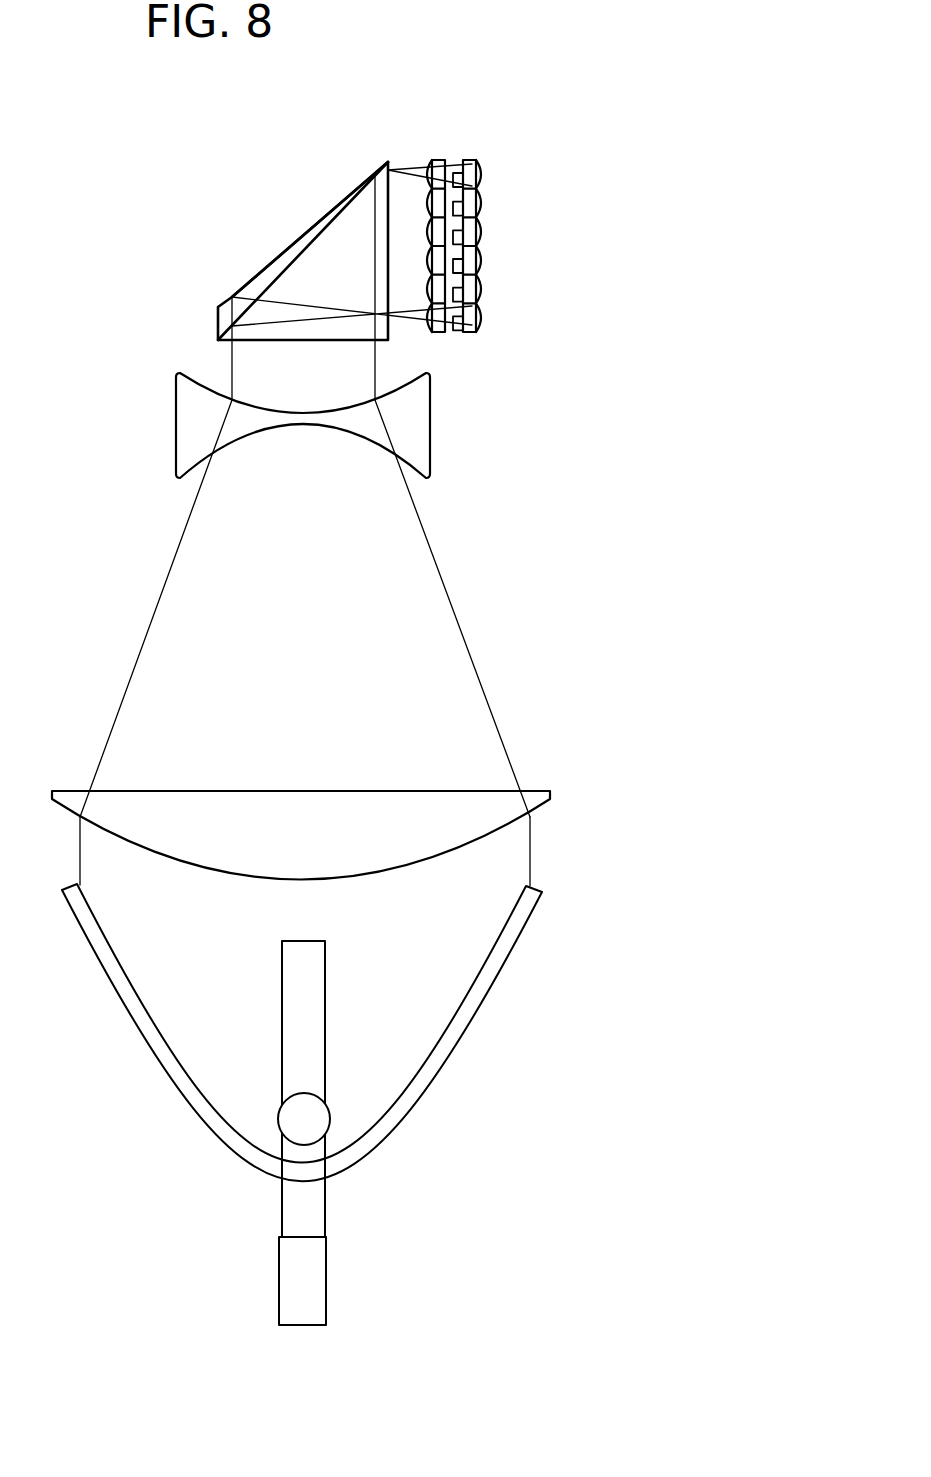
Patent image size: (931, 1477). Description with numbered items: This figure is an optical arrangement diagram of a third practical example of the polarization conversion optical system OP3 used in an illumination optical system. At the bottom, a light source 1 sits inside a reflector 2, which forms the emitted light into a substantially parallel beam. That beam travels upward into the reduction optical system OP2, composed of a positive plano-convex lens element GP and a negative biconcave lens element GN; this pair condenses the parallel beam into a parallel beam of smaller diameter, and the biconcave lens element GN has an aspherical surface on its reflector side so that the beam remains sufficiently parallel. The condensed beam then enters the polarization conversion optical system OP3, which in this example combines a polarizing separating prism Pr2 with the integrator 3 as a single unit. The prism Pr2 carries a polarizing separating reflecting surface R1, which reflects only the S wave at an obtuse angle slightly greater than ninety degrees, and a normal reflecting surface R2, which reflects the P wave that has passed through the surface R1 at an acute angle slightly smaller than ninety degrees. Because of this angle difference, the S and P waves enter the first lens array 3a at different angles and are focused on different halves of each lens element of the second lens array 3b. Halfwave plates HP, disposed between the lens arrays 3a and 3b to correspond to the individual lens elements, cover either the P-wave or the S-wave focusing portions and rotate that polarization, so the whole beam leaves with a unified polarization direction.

The light source 1 is at (317, 1123).
The reflector 2 is at (465, 1034).
The integrator 3 is at (513, 103).
The first lens array 3a is at (435, 158).
The second lens array 3b is at (470, 158).
The halfwave plates HP is at (463, 339).
The polarization conversion optical system OP3 is at (138, 143).
The reduction optical system OP2 is at (444, 361).
The polarizing separating prism Pr2 is at (218, 323).
The polarizing separating reflecting surface R1 is at (272, 278).
The reflecting surface R2 is at (300, 237).
The negative biconcave lens element GN is at (185, 435).
The positive plano-convex lens element GP is at (529, 791).